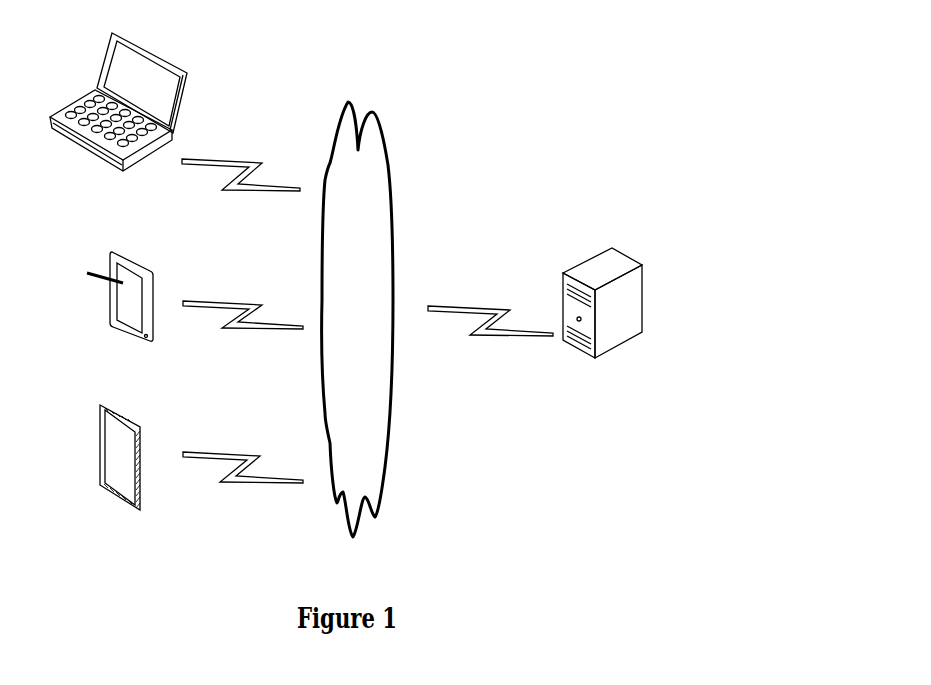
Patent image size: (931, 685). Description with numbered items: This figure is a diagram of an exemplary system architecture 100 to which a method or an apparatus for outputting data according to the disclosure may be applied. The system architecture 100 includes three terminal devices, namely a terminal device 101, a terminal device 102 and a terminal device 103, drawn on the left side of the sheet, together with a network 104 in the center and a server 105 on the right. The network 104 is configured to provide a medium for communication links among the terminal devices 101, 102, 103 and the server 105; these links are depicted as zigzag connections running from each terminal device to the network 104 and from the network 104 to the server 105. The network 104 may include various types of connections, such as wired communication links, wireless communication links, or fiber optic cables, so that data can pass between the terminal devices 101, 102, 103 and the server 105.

The system architecture 100 is at (537, 30).
The terminal device 101 is at (120, 477).
The terminal device 102 is at (120, 313).
The terminal device 103 is at (118, 119).
The network 104 is at (357, 319).
The server 105 is at (602, 321).